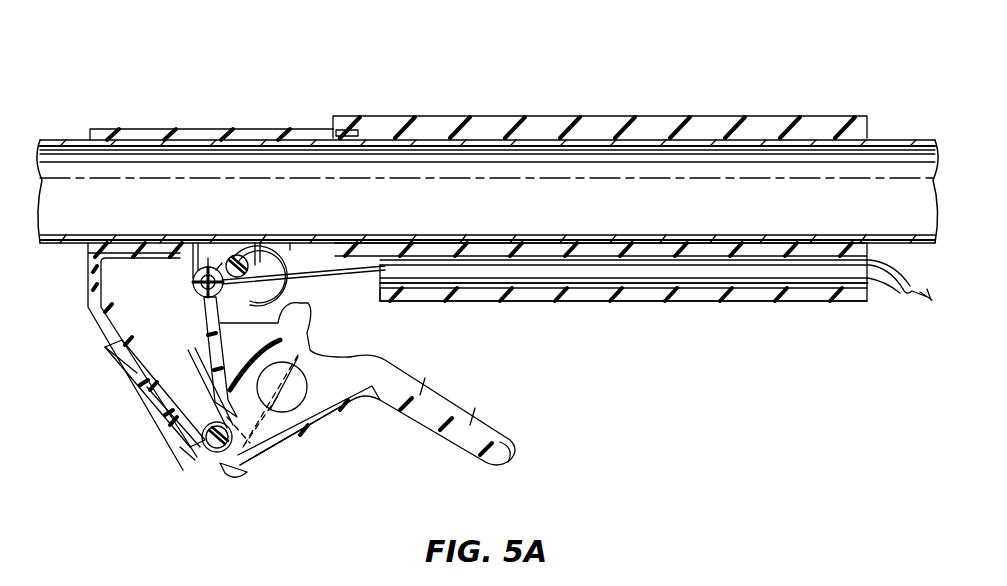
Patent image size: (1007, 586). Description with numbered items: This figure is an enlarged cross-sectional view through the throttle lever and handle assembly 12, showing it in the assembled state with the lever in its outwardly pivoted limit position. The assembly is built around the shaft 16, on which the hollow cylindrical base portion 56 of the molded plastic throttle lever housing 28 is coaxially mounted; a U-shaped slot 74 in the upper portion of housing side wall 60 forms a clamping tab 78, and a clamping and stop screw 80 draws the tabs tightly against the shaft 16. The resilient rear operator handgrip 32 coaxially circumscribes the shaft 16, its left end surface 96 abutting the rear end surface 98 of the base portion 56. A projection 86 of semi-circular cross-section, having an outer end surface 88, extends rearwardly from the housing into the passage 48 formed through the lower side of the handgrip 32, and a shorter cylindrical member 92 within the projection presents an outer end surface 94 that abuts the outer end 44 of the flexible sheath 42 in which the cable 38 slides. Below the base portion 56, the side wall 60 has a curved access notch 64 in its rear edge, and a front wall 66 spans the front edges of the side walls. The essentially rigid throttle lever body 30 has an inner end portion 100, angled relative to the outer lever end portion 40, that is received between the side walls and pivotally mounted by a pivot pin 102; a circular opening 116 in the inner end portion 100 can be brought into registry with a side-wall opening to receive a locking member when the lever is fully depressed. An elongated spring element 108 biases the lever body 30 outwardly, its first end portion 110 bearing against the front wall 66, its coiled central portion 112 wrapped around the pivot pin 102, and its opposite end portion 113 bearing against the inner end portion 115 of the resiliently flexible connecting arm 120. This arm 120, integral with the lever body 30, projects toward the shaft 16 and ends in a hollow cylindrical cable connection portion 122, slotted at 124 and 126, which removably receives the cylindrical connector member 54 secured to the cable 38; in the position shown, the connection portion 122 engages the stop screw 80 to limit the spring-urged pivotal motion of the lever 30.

The throttle lever and handle assembly 12 is at (462, 76).
The shaft 16 is at (68, 140).
The throttle lever housing 28 is at (106, 356).
The throttle lever body 30 is at (347, 414).
The rear operator handgrip 32 is at (603, 116).
The cable 38 is at (368, 292).
The outer lever end portion 40 is at (452, 455).
The flexible sheath 42 is at (888, 292).
The outer end of the sheath 44 is at (382, 283).
The passage 48 is at (820, 260).
The cylindrical connector member 54 is at (196, 288).
The base portion 56 is at (148, 129).
The housing side wall 60 is at (170, 347).
The access notch 64 is at (318, 322).
The front wall 66 is at (152, 427).
The U-shaped slot 74 is at (290, 243).
The clamping tab 78 is at (263, 262).
The clamping and stop screw 80 is at (240, 255).
The projection 86 is at (418, 292).
The outer end surface 88 is at (448, 290).
The cylindrical member 92 is at (372, 262).
The outer end surface 94 is at (400, 256).
The left end surface 96 is at (334, 128).
The rear end surface 98 is at (366, 130).
The inner end portion 100 is at (298, 440).
The pivot pin 102 is at (187, 462).
The spring element 108 is at (180, 447).
The first end portion 110 is at (147, 387).
The coiled central portion 112 is at (248, 466).
The opposite end portion 113 is at (137, 373).
The inner end portion 115 is at (212, 408).
The circular opening 116 is at (296, 392).
The flexible connecting arm 120 is at (226, 333).
The cable connection portion 122 is at (187, 280).
The slot 124 is at (212, 258).
The slot 126 is at (232, 262).